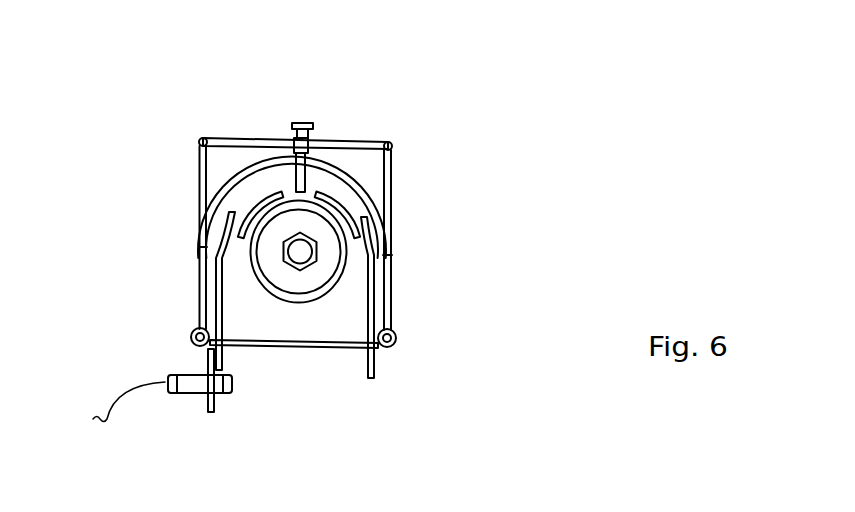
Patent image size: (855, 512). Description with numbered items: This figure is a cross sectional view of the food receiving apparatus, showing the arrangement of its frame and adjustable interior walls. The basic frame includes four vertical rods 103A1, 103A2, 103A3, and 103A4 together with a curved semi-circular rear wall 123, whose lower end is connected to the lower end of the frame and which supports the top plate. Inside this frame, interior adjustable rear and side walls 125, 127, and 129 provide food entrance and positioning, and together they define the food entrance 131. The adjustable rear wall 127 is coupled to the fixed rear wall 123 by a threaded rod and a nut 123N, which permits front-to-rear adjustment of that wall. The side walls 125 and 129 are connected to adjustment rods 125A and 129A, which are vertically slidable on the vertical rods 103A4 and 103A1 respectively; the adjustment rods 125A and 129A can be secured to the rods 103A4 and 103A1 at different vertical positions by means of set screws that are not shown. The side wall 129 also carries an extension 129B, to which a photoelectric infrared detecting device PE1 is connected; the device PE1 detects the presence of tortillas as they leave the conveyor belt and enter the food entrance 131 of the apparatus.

The vertical rod 103A1 is at (195, 330).
The vertical rod 103A2 is at (199, 136).
The vertical rod 103A3 is at (393, 140).
The vertical rod 103A4 is at (395, 344).
The semi-circular rear wall 123 is at (357, 178).
The nut 123N is at (300, 123).
The side wall 125 is at (391, 255).
The adjustment rod 125A is at (395, 331).
The adjustable rear wall 127 is at (263, 198).
The side wall 129 is at (200, 260).
The adjustment rod 129A is at (195, 330).
The extension 129B is at (205, 404).
The food entrance 131 is at (307, 368).
The photo electric detecting device PE1 is at (193, 375).